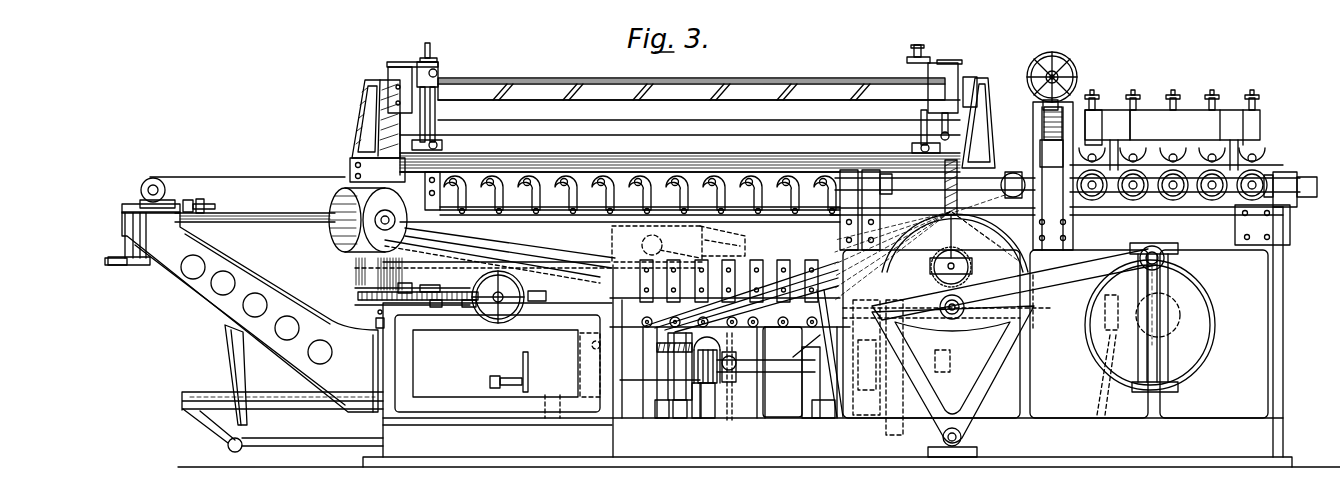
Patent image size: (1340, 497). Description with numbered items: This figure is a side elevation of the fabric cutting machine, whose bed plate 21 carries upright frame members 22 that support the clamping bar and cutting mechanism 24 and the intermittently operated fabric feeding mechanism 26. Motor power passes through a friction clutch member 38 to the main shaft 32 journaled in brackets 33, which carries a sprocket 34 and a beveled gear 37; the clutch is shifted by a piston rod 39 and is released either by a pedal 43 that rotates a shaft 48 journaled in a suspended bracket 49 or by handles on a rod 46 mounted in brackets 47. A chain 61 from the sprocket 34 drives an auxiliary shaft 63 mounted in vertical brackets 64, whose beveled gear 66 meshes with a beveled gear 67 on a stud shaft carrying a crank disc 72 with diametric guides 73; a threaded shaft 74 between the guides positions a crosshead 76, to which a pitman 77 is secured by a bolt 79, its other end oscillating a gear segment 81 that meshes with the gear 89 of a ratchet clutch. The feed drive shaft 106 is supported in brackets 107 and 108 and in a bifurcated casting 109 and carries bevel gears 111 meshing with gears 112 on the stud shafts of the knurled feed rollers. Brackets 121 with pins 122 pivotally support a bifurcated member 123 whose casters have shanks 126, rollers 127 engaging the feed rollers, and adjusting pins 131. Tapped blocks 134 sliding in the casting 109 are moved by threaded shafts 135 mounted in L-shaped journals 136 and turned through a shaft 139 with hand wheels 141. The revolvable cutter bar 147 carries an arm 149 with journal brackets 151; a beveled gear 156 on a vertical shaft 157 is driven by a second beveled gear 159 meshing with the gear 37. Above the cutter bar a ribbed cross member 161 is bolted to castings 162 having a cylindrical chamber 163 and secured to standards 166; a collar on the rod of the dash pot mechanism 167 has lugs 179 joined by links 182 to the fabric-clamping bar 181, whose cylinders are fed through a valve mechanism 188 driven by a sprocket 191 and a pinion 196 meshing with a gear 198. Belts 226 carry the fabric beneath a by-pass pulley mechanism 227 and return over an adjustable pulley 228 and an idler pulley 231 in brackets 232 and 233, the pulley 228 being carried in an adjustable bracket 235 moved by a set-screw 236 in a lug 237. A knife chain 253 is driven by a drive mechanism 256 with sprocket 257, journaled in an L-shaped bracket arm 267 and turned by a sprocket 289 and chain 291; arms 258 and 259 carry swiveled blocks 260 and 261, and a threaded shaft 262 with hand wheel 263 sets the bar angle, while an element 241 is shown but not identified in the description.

The bed plate 21 is at (497, 436).
The vertical frame members 22 is at (198, 296).
The clamping bar and cutting mechanism 24 is at (505, 135).
The intermittently operated fabric feeding mechanism 26 is at (1208, 357).
The shaft 32 is at (782, 372).
The brackets 33 is at (710, 418).
The sprocket 34 is at (830, 368).
The beveled gear 37 is at (696, 395).
The friction clutch member 38 is at (870, 418).
The piston rod 39 is at (900, 436).
The pedal 43 is at (190, 392).
The rod 46 is at (144, 262).
The brackets 47 is at (127, 266).
The shaft 48 is at (310, 440).
The suspended bracket 49 is at (227, 344).
The chain 61 is at (810, 345).
The auxiliary shaft 63 is at (1052, 322).
The vertical brackets 64 is at (815, 409).
The beveled gear 66 is at (1130, 302).
The beveled gear 67 is at (1180, 313).
The crank disc 72 is at (1216, 322).
The parallel diametric guides 73 is at (1168, 272).
The threaded shaft 74 is at (1160, 290).
The crosshead 76 is at (1178, 247).
The pitman 77 is at (1086, 272).
The bolt 79 is at (1166, 257).
The gear segment 81 is at (990, 371).
The gear 89 is at (967, 272).
The horizontal drive shaft 106 is at (900, 177).
The bracket 107 is at (1290, 172).
The bracket 108 is at (855, 172).
The bifurcated casting 109 is at (1073, 106).
The bevel gears 111 is at (1312, 180).
The gear 112 is at (1270, 174).
The brackets 121 is at (1110, 118).
The pin 122 is at (1130, 126).
The bifurcated member 123 is at (1195, 127).
The bifurcated shouldered shank 126 is at (1176, 100).
The roller 127 is at (1168, 168).
The pin 131 is at (1133, 96).
The tapped blocks 134 is at (1040, 152).
The threaded shaft 135 is at (1044, 128).
The L-shaped journal member 136 is at (1043, 103).
The shaft 139 is at (1060, 76).
The hand wheel 141 is at (1056, 55).
The revolvable cutter bar 147 is at (702, 176).
The arm 149 is at (738, 236).
The suspended journal brackets 151 is at (742, 250).
The beveled gear 156 is at (597, 372).
The vertically disposed shaft 157 is at (660, 418).
The second beveled gear 159 is at (668, 372).
The ribbed cross member 161 is at (746, 86).
The casting 162 is at (442, 75).
The cylindrical chamber 163 is at (955, 70).
The standard 166 is at (366, 118).
The dash pot mechanism 167 is at (432, 58).
The lug portions 179 is at (937, 62).
The fabric-clamping bar 181 is at (630, 135).
The links 182 is at (427, 118).
The valve mechanism 188 is at (562, 420).
The sprocket 191 is at (733, 418).
The pinion 196 is at (500, 381).
The gear 198 is at (526, 372).
The belts 226 is at (270, 176).
The by-pass pulley mechanism 227 is at (585, 178).
The adjustable pulley 228 is at (157, 178).
The idler pulley 231 is at (716, 348).
The bracket 232 is at (375, 322).
The bracket 233 is at (775, 262).
The linearly adjustable bracket 235 is at (186, 199).
The set-screw 236 is at (205, 207).
The lug 237 is at (206, 203).
The finger 241 is at (760, 178).
The driven chain 253 is at (436, 287).
The drive mechanism 256 is at (338, 184).
The sprocket 257 is at (330, 232).
The arm 258 is at (480, 284).
The arm 259 is at (395, 286).
The swiveled block 260 is at (469, 306).
The swiveled block 261 is at (358, 296).
The threaded shaft 262 is at (436, 306).
The hand wheel 263 is at (535, 303).
The L-shaped bracket arm 267 is at (377, 170).
The sprocket 289 is at (430, 243).
The chain 291 is at (520, 243).